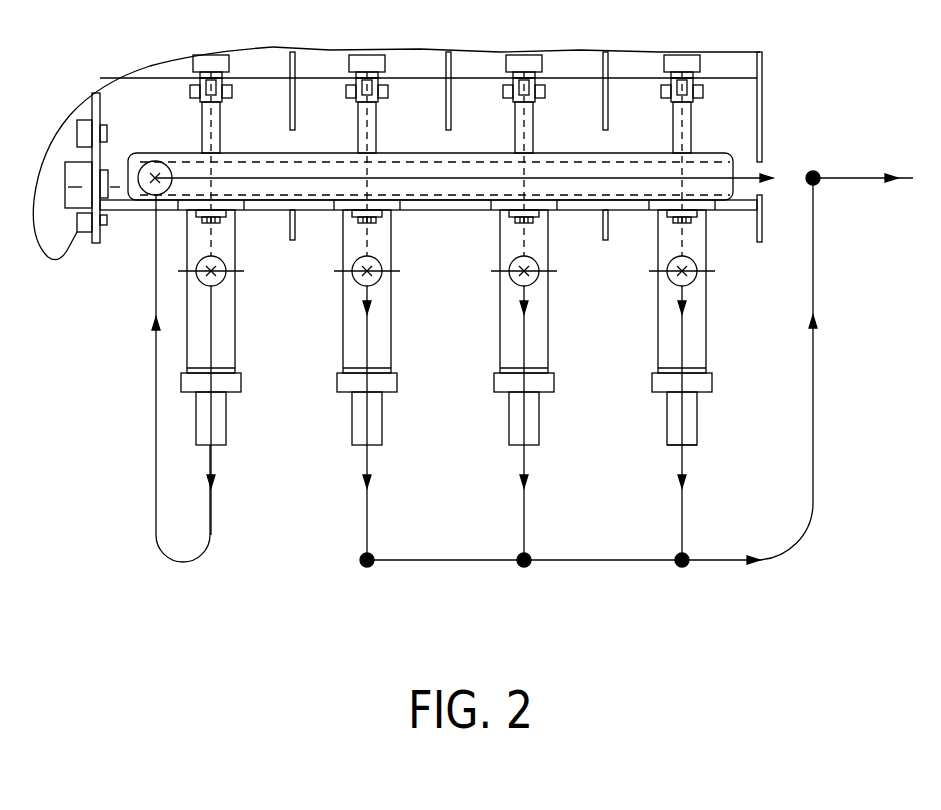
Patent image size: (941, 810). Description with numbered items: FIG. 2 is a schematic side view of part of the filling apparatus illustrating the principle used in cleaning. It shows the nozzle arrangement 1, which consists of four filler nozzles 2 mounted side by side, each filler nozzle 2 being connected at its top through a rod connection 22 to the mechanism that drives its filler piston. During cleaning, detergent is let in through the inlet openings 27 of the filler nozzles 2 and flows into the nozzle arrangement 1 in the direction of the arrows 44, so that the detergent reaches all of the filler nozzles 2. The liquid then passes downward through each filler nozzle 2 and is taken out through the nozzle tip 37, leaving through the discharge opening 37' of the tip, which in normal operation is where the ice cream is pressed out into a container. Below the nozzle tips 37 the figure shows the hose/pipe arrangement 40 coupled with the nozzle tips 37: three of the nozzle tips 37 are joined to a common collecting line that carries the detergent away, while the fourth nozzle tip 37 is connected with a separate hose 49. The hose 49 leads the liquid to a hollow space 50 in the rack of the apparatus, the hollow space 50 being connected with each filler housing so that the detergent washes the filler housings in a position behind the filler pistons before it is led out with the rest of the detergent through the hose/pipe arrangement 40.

The nozzle arrangement 1 is at (786, 150).
The filler nozzle 2 is at (228, 352).
The rod connection 22 is at (220, 130).
The inlet opening 27 is at (230, 274).
The nozzle tip 37 is at (477, 418).
The discharge opening 37' is at (712, 462).
The hose/pipe arrangement 40 is at (824, 455).
The arrows 44 is at (410, 179).
The hose 49 is at (154, 258).
The hollow space 50 is at (318, 158).